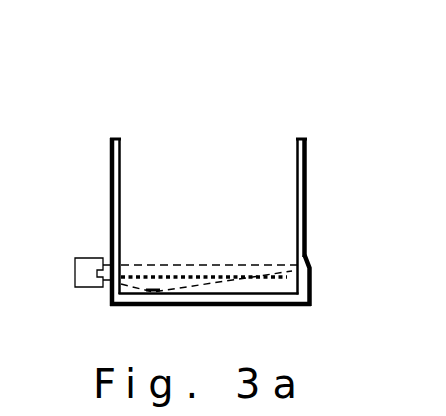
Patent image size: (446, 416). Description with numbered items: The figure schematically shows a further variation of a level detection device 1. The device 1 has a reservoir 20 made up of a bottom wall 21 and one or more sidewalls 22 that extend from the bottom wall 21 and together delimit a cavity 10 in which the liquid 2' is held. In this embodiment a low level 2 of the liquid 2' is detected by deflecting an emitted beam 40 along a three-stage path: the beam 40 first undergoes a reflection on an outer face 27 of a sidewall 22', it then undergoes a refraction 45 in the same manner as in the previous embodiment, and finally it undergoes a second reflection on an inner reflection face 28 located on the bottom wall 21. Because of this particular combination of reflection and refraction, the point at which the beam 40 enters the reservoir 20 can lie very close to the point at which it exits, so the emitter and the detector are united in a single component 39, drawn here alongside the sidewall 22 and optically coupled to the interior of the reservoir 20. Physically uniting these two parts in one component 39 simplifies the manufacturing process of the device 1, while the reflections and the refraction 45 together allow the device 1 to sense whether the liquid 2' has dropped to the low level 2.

The device 1 is at (123, 97).
The reservoir 20 is at (197, 145).
The sidewall 22 is at (83, 207).
The sidewall 22' is at (268, 181).
The bottom wall 21 is at (212, 303).
The outer face 27 is at (315, 260).
The low level 2 is at (323, 229).
The liquid 2' is at (234, 323).
The cavity 10 is at (149, 165).
The single component 39 is at (83, 270).
The emitted beam 40 is at (155, 265).
The refraction 45 is at (217, 278).
The inner reflection face 28 is at (155, 291).